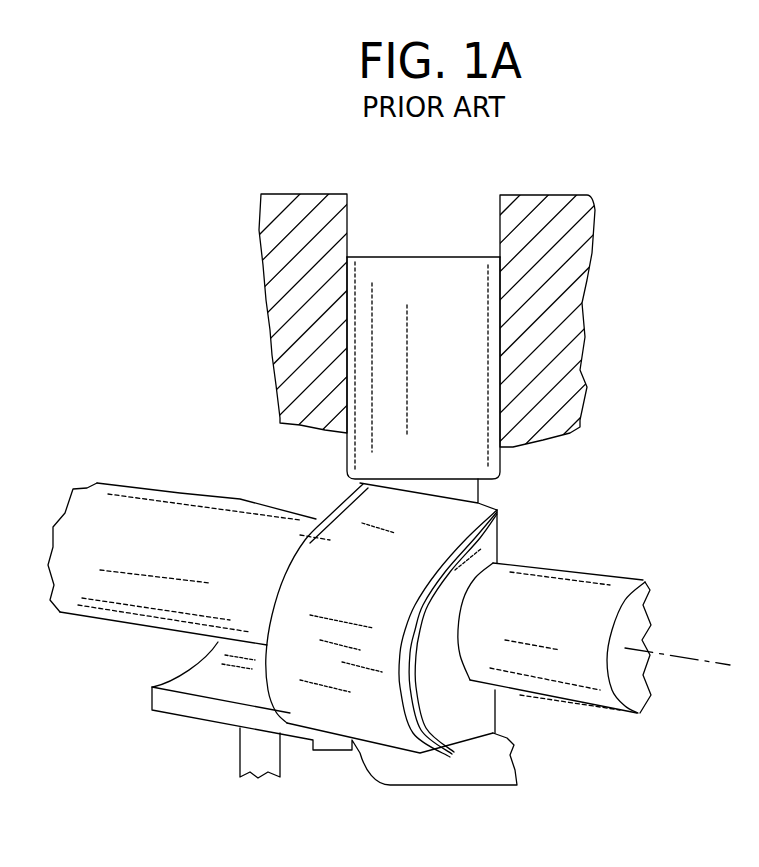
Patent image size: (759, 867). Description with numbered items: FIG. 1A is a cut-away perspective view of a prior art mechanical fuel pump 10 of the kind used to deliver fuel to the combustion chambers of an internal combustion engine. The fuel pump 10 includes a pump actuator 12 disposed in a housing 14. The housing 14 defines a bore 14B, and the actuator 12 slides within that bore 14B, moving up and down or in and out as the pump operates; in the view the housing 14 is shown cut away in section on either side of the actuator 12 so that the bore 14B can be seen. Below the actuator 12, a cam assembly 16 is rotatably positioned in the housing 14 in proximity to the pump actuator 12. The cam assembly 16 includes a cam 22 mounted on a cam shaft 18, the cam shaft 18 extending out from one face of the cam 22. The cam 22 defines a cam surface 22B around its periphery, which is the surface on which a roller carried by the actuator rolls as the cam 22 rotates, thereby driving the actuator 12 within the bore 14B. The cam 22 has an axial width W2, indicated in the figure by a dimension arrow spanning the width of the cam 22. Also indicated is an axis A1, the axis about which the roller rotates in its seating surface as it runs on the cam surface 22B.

The mechanical fuel pump 10 is at (370, 200).
The pump actuator 12 is at (356, 327).
The housing 14 is at (583, 237).
The bore 14B is at (352, 272).
The cam assembly 16 is at (77, 551).
The cam shaft 18 is at (580, 667).
The cam 22 is at (370, 672).
The cam surface 22B is at (316, 637).
The axial width W2 is at (476, 603).
The axis A1 is at (715, 658).